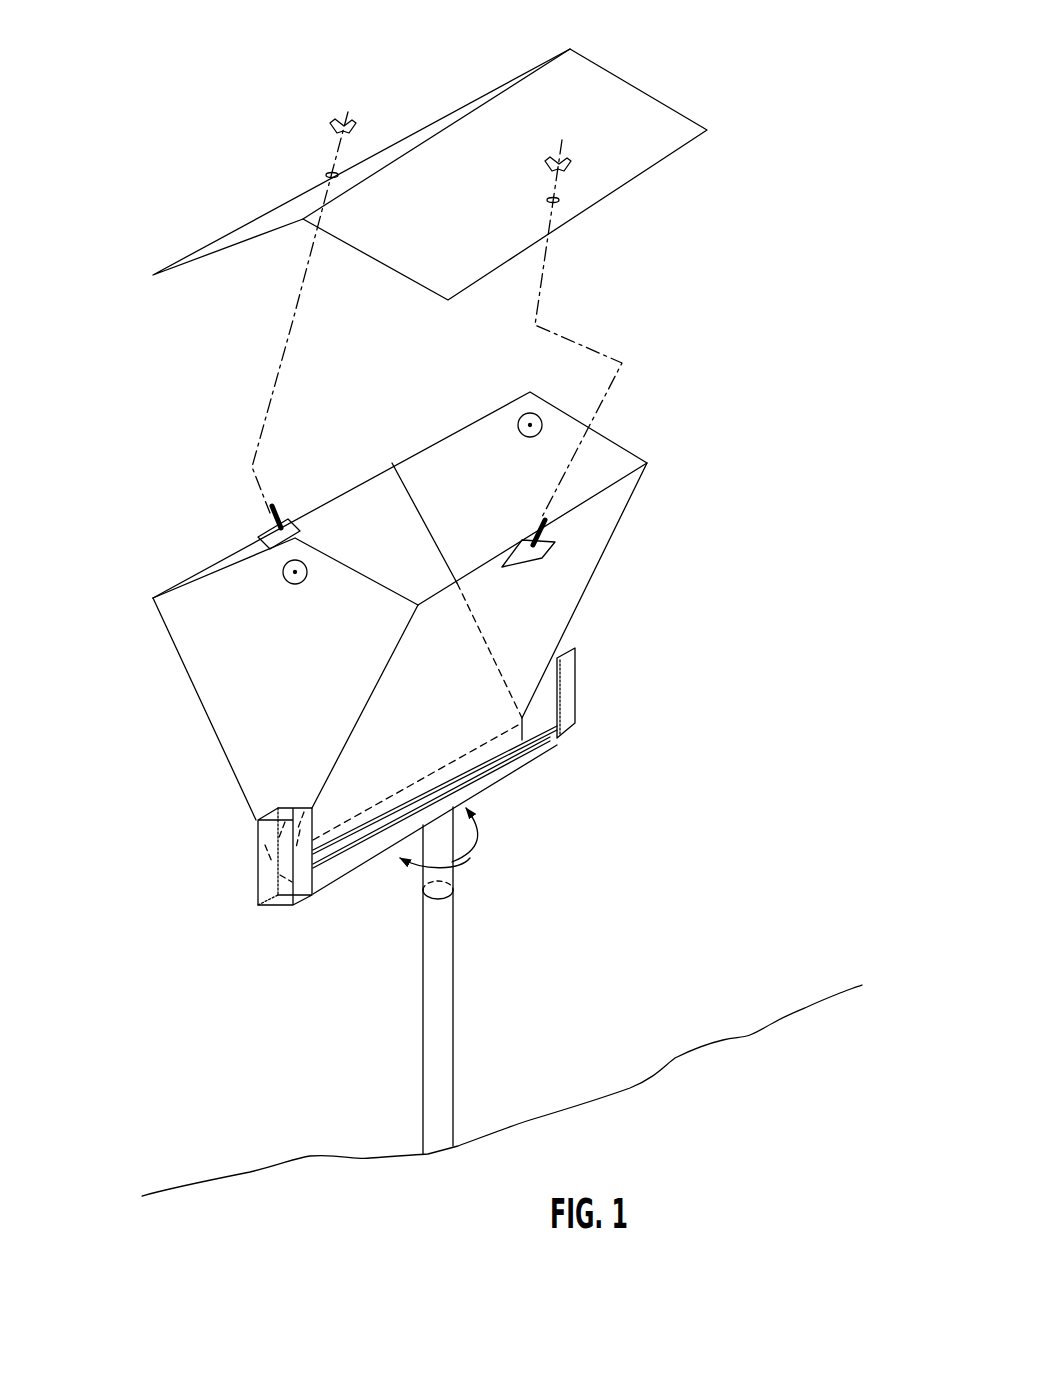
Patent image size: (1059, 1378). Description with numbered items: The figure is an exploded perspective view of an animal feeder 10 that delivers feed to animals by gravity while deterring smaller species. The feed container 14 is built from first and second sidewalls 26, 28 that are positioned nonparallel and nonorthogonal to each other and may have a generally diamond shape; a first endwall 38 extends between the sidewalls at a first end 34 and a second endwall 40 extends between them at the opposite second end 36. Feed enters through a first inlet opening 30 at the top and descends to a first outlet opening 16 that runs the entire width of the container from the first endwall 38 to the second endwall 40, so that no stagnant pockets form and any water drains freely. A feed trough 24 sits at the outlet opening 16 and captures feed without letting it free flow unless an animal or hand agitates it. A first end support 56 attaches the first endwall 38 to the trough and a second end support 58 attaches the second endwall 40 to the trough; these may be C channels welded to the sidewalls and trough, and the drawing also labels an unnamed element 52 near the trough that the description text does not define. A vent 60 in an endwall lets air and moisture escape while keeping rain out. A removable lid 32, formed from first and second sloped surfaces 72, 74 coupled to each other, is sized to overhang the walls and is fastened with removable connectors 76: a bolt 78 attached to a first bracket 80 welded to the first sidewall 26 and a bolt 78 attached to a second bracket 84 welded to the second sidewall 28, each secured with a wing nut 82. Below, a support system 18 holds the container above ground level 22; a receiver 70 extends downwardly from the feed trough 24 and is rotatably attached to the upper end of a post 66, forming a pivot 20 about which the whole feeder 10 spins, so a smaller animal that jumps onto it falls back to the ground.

The animal feeder 10 is at (693, 412).
The feed container 14 is at (585, 542).
The first outlet opening 16 is at (473, 750).
The support system 18 is at (490, 852).
The pivot 20 is at (467, 876).
The ground level 22 is at (677, 1057).
The feed trough 24 is at (520, 735).
The first sidewall 26 is at (217, 757).
The second sidewall 28 is at (522, 627).
The first inlet opening 30 is at (587, 517).
The removable lid 32 is at (530, 122).
The first end 34 is at (632, 502).
The second end 36 is at (265, 655).
The first endwall 38 is at (620, 525).
The second endwall 40 is at (250, 632).
The mounting plate 52 is at (360, 874).
The first end support 56 is at (573, 685).
The second end support 58 is at (285, 840).
The vent 60 is at (537, 416).
The post 66 is at (457, 992).
The receiver 70 is at (440, 866).
The first sloped surface 72 is at (600, 118).
The second sloped surface 74 is at (412, 130).
The removable connectors 76 is at (323, 137).
The bolt 78 is at (270, 518).
The first bracket 80 is at (263, 532).
The wing nut 82 is at (332, 138).
The second bracket 84 is at (528, 558).